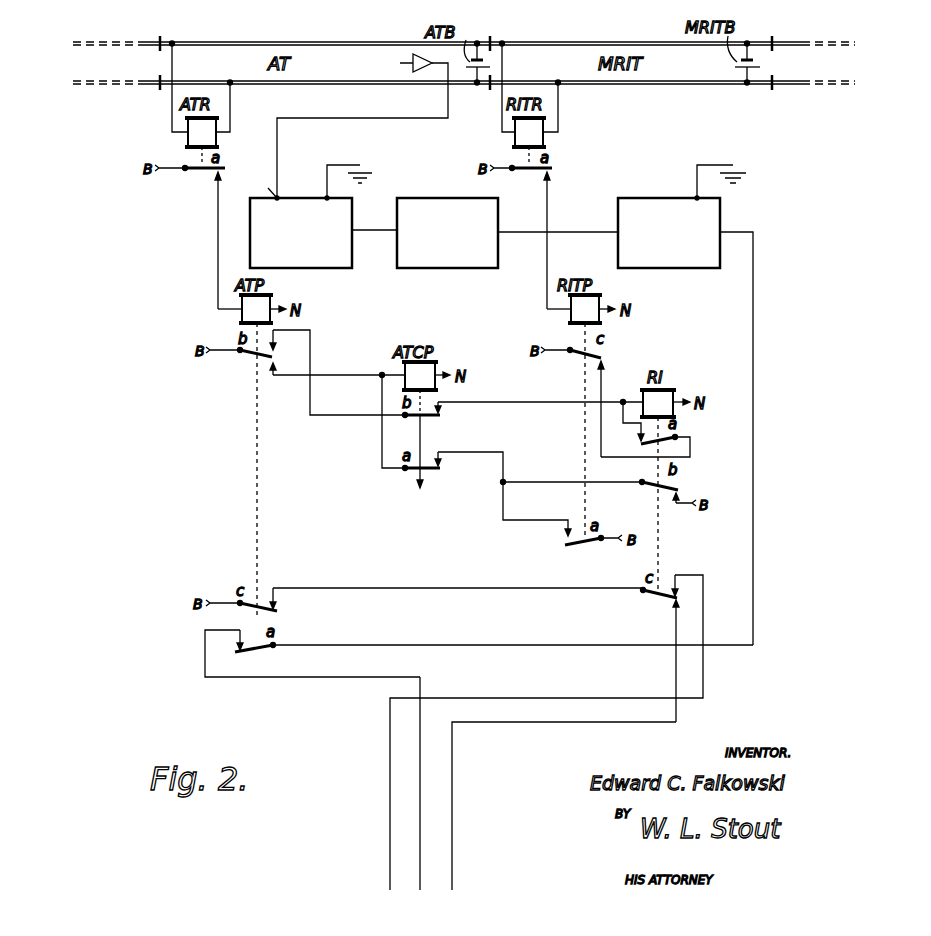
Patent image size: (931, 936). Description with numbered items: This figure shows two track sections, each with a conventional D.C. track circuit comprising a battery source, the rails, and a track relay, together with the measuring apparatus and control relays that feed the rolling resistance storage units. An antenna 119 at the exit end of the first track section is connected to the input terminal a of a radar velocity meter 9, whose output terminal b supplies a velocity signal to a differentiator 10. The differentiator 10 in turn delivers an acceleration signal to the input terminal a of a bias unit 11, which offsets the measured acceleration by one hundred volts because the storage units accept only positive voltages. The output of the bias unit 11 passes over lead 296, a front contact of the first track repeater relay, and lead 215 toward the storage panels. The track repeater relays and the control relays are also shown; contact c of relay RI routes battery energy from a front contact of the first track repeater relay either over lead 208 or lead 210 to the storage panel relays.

The antenna 119 is at (362, 126).
The radar velocity meter 9 is at (330, 268).
The differentiator 10 is at (425, 268).
The bias unit 11 is at (660, 268).
The lead 296 is at (753, 423).
The lead 208 is at (390, 728).
The lead 210 is at (452, 755).
The lead 215 is at (420, 786).